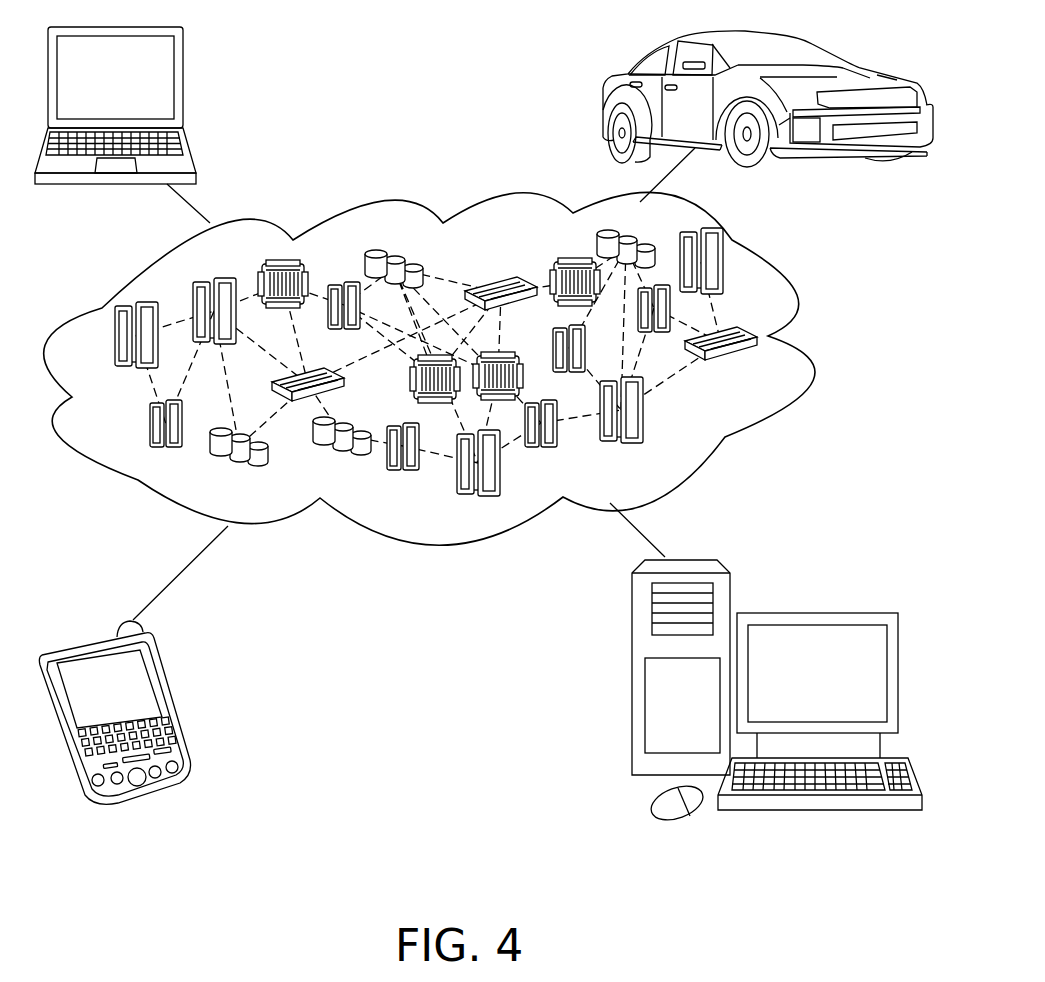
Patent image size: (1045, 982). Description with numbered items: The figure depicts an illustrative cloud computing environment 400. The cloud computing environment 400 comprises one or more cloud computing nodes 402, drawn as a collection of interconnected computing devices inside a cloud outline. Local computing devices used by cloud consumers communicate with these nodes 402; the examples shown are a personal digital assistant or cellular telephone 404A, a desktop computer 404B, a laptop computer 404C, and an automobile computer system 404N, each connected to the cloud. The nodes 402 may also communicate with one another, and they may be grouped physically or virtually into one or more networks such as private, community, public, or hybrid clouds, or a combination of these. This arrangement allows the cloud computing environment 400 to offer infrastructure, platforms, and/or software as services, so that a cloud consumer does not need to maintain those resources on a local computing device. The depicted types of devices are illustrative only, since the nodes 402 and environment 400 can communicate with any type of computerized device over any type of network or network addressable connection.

The cloud computing environment 400 is at (767, 337).
The cloud computing nodes 402 is at (757, 367).
The personal digital assistant (PDA) or cellular telephone 404A is at (160, 670).
The desktop computer 404B is at (803, 613).
The laptop computer 404C is at (182, 63).
The automobile computer system 404N is at (605, 103).